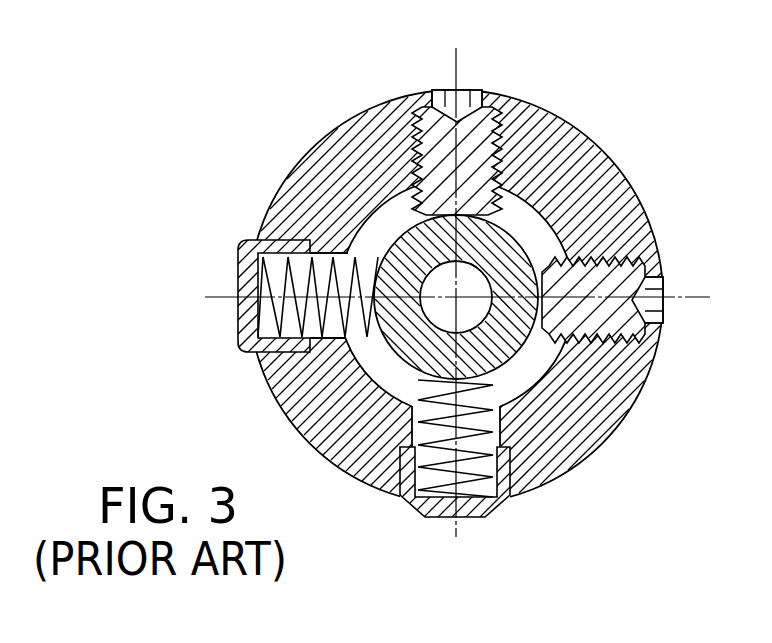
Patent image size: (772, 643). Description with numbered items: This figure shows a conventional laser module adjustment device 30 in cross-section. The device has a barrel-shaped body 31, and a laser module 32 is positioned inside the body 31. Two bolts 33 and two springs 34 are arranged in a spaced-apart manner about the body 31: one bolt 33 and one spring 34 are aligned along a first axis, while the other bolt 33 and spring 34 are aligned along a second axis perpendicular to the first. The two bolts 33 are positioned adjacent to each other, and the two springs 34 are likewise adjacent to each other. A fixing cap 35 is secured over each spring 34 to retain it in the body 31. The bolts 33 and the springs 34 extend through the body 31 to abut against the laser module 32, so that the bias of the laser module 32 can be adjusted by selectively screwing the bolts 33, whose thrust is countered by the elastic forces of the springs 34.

The laser module adjustment device 30 is at (438, 283).
The barrel-shaped body 31 is at (287, 180).
The laser module 32 is at (407, 352).
The bolt 33 is at (500, 132).
The spring 34 is at (333, 335).
The fixing cap 35 is at (238, 307).